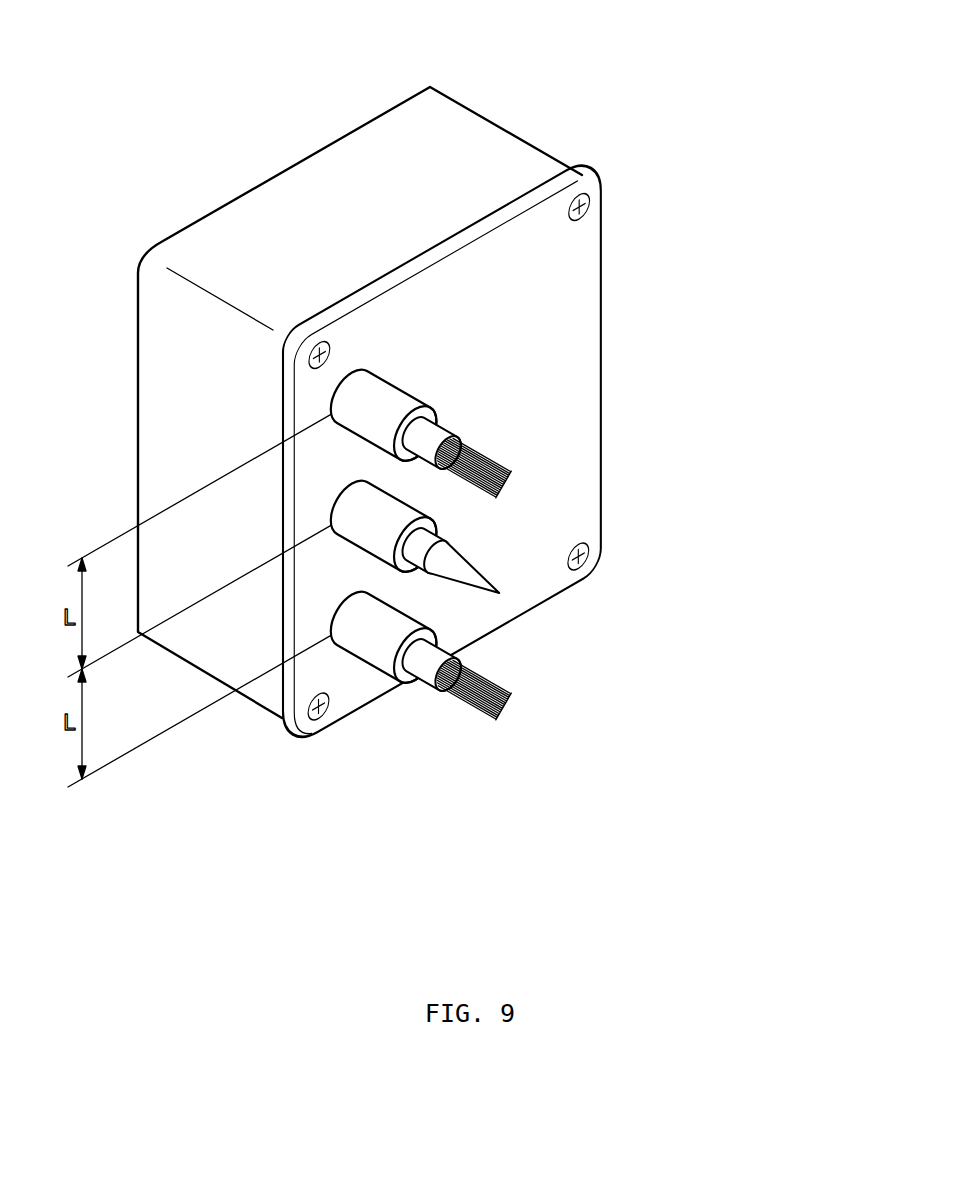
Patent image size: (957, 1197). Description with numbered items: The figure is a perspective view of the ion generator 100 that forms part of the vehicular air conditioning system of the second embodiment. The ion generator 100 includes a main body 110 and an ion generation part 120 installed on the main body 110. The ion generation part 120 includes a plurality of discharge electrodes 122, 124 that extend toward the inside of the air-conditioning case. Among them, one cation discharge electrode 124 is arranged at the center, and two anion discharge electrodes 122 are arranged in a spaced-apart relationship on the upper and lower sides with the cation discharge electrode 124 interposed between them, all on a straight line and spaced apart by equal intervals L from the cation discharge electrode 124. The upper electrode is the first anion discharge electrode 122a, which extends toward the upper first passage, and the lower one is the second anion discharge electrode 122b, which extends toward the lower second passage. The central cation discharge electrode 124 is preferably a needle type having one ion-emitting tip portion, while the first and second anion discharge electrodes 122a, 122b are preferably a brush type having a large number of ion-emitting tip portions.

The ion generator 100 is at (364, 123).
The main body 110 is at (302, 185).
The ion generation part 120 is at (792, 432).
The anion discharge electrode 122 is at (550, 547).
The first anion discharge electrode 122a is at (497, 462).
The second anion discharge electrode 122b is at (498, 685).
The cation discharge electrode 124 is at (468, 575).